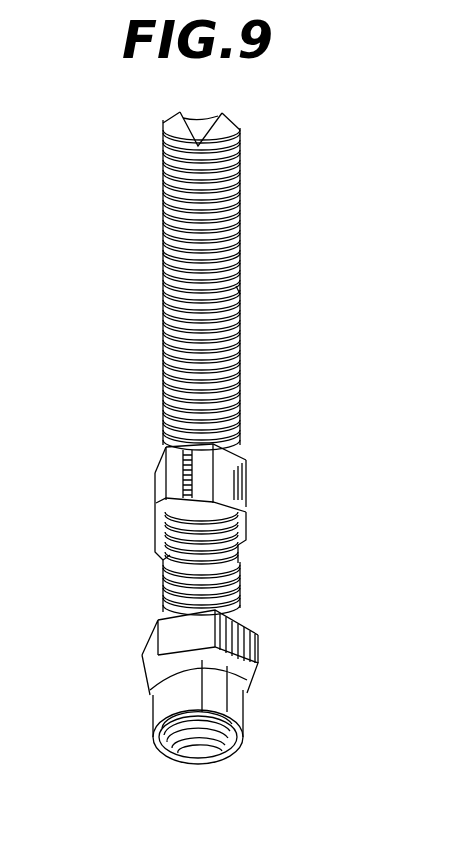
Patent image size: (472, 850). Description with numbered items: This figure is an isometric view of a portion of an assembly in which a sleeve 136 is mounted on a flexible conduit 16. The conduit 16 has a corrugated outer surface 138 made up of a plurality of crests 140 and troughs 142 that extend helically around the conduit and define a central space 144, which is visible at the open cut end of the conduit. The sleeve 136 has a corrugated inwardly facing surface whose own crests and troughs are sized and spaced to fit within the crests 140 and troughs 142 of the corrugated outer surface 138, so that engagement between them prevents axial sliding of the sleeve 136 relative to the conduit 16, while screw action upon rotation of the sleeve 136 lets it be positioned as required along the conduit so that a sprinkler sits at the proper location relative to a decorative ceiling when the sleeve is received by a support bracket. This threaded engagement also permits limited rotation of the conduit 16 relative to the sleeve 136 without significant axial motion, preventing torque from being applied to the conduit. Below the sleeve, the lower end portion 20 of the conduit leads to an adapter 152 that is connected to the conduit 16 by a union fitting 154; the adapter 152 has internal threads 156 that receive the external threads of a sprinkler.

The flexible conduit 16 is at (163, 153).
The central space 144 is at (215, 128).
The troughs 142 is at (165, 282).
The crests 140 is at (165, 313).
The corrugated outer surface 138 is at (238, 290).
The sleeve 136 is at (250, 488).
The hose end section 20 is at (148, 607).
The union fitting 154 is at (258, 652).
The adapter 152 is at (248, 705).
The internal threads 156 is at (205, 735).